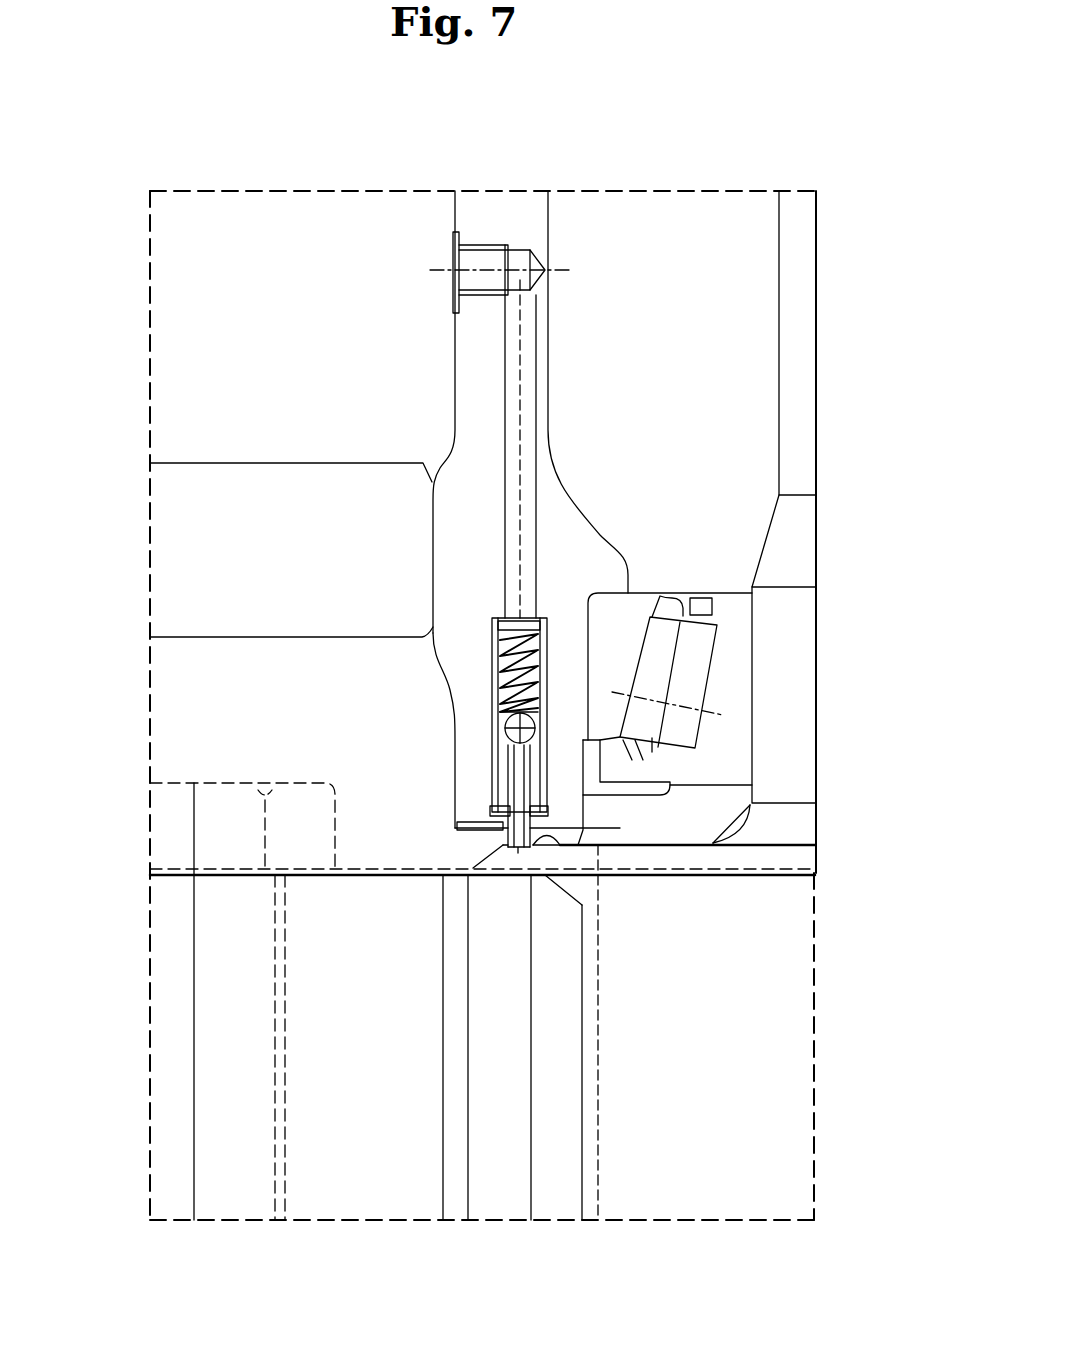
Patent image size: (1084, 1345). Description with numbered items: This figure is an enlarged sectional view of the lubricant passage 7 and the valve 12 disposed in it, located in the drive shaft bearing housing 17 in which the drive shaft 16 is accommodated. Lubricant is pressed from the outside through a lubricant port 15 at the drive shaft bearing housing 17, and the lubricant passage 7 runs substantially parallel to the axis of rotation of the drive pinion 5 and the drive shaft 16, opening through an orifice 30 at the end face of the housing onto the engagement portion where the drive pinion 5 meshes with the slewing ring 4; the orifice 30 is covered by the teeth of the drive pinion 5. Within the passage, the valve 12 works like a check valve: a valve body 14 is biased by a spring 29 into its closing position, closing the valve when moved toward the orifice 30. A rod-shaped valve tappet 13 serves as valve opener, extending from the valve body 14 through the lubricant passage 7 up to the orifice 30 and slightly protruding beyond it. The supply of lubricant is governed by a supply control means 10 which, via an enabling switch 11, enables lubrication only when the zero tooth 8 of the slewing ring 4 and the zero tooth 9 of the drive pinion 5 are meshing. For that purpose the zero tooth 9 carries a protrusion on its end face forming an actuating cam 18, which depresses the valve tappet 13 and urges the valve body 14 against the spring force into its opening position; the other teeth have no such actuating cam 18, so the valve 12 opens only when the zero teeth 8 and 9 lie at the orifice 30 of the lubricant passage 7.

The slewing ring 4 is at (313, 1207).
The drive pinion 5 is at (795, 1148).
The lubricant passage 7 is at (528, 518).
The zero tooth of the slewing ring 8 is at (585, 1195).
The zero tooth of the drive pinion 9 is at (465, 1170).
The supply control means 10 is at (380, 688).
The enabling switch 11 is at (480, 838).
The valve 12 is at (468, 703).
The valve tappet 13 is at (503, 788).
The valve body 14 is at (505, 730).
The lubricant port 15 is at (455, 275).
The drive shaft 16 is at (805, 687).
The drive shaft bearing housing 17 is at (463, 383).
The actuating cam 18 is at (553, 840).
The spring 29 is at (492, 657).
The orifice 30 is at (457, 828).